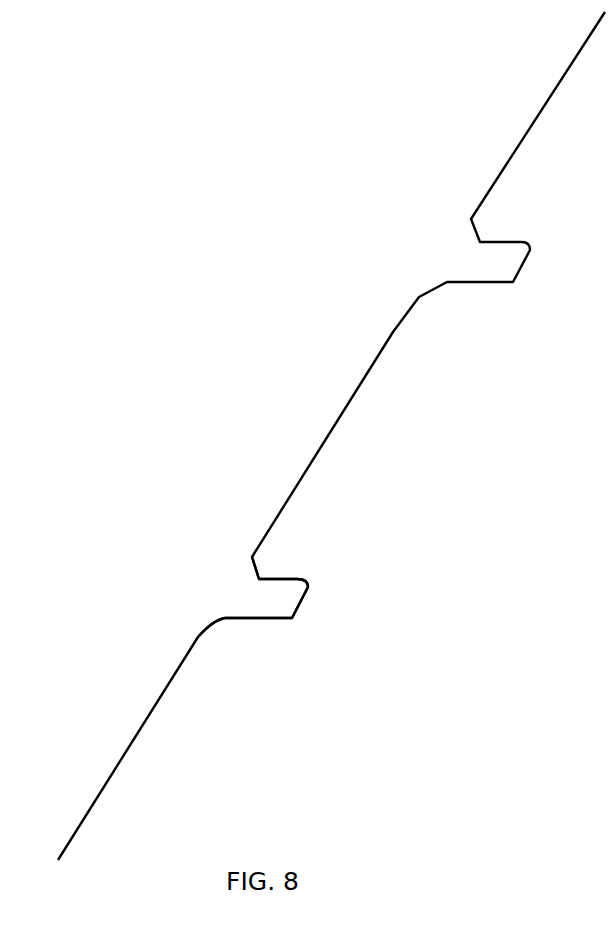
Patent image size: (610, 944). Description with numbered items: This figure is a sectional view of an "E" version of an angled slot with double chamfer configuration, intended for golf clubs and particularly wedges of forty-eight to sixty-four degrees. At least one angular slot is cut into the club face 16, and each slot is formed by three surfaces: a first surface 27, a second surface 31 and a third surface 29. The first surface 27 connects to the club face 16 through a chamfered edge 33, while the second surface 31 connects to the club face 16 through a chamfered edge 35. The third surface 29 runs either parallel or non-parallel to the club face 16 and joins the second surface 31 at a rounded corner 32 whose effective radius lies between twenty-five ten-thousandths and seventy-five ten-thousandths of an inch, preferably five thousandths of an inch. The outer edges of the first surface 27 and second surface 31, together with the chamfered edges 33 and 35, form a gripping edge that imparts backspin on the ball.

The club face 16 is at (393, 331).
The chamfered edge 35 is at (253, 566).
The second surface 31 is at (294, 578).
The rounded corner 32 is at (307, 585).
The third surface 29 is at (302, 603).
The first surface 27 is at (280, 618).
The chamfered edge 33 is at (215, 628).